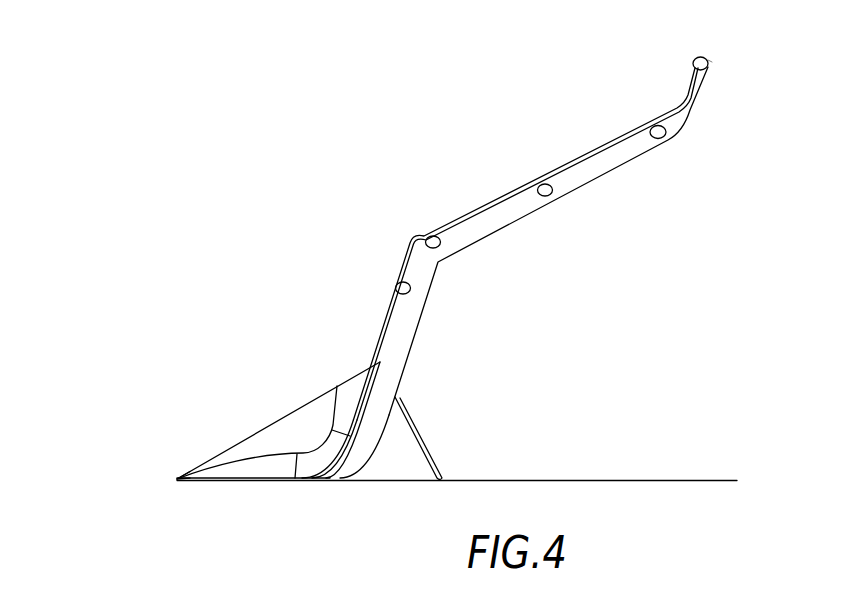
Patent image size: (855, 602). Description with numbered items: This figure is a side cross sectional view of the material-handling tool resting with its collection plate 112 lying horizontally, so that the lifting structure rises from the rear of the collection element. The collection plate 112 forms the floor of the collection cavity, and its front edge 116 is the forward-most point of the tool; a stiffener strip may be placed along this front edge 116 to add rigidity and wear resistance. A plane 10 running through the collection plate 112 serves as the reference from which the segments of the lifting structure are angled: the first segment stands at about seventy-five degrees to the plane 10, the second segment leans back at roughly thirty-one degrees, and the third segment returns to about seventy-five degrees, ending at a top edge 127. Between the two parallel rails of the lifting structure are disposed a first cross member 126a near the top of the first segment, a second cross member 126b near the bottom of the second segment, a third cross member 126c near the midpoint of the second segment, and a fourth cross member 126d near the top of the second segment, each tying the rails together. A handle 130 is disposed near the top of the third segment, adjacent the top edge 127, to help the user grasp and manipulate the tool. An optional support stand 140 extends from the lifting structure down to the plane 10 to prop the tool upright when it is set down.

The plane running through the collection plate 10 is at (463, 172).
The collection plate 112 is at (233, 481).
The front edge 116 is at (166, 484).
The first cross member 126a is at (398, 287).
The second cross member 126b is at (428, 238).
The third cross member 126c is at (548, 197).
The fourth cross member 126d is at (663, 138).
The top edge of the third segment 127 is at (720, 57).
The handle 130 is at (697, 57).
The support stand 140 is at (428, 442).